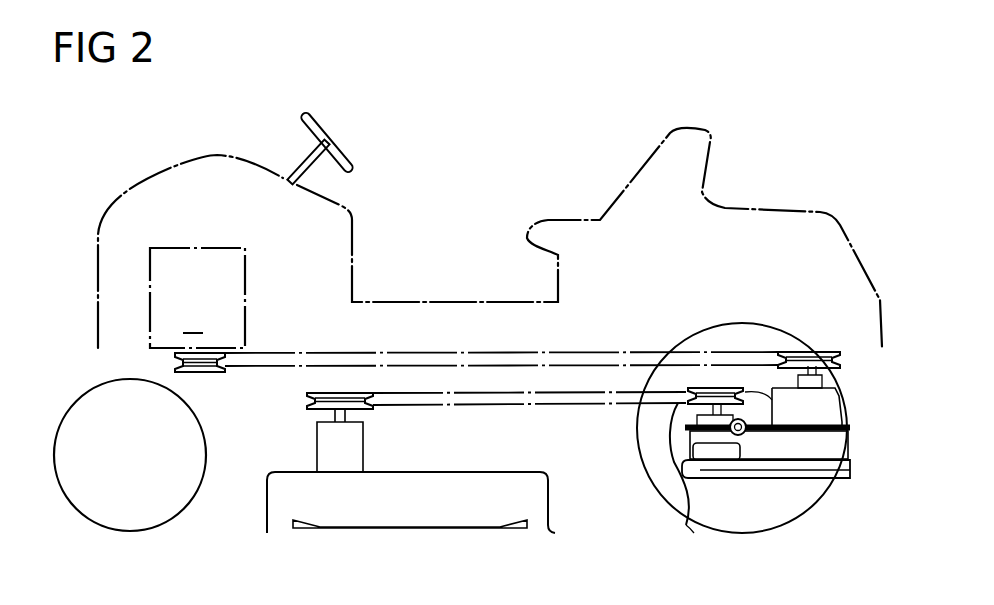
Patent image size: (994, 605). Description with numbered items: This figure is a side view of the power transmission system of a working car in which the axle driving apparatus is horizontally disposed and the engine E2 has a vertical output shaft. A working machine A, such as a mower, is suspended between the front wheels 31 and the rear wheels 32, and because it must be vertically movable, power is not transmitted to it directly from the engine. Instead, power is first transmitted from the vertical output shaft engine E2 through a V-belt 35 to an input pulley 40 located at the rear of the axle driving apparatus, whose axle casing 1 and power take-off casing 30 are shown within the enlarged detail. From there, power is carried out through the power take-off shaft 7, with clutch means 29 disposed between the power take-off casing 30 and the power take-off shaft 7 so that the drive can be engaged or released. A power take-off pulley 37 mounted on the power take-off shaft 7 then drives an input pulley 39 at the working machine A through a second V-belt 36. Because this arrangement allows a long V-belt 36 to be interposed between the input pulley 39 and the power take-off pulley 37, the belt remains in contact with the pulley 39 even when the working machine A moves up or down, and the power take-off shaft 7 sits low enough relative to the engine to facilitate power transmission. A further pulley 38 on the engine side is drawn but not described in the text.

The axle casing 1 is at (837, 445).
The power take-off shaft 7 is at (731, 387).
The clutch means 29 is at (688, 518).
The power take-off casing 30 is at (720, 478).
The front wheels 31 is at (183, 503).
The rear wheels 32 is at (662, 498).
The V-belt 35 is at (522, 350).
The V-belt 36 is at (553, 408).
The power take-off pulley 37 is at (697, 387).
The engine output pulley 38 is at (197, 372).
The input pulley 39 is at (367, 410).
The input pulley 40 is at (832, 347).
The working machine A is at (290, 470).
The engine E2 is at (197, 298).